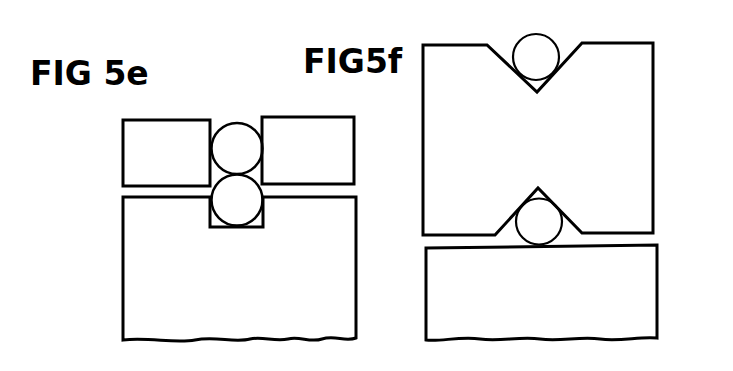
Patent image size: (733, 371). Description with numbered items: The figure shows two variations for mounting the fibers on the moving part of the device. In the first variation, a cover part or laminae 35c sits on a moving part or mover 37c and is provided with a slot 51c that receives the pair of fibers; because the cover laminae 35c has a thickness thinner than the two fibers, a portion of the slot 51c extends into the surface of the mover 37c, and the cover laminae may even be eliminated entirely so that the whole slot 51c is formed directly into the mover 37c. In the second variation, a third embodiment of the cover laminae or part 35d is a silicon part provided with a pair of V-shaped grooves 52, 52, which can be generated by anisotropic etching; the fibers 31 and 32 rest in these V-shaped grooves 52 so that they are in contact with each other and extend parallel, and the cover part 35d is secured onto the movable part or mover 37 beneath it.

In FIG. 5E, the cover part or laminae 35c is at (302, 128).
In FIG. 5E, the slot 51c is at (252, 123).
In FIG. 5E, the moving part or mover 37c is at (335, 223).
In FIG. 5F, the cover laminae or part 35d is at (646, 70).
In FIG. 5F, the fiber 31 is at (548, 63).
In FIG. 5F, the fiber 32 is at (547, 218).
In FIG. 5F, the V-shaped groove 52 is at (507, 52).
In FIG. 5F, the movable part or mover 37 is at (648, 272).